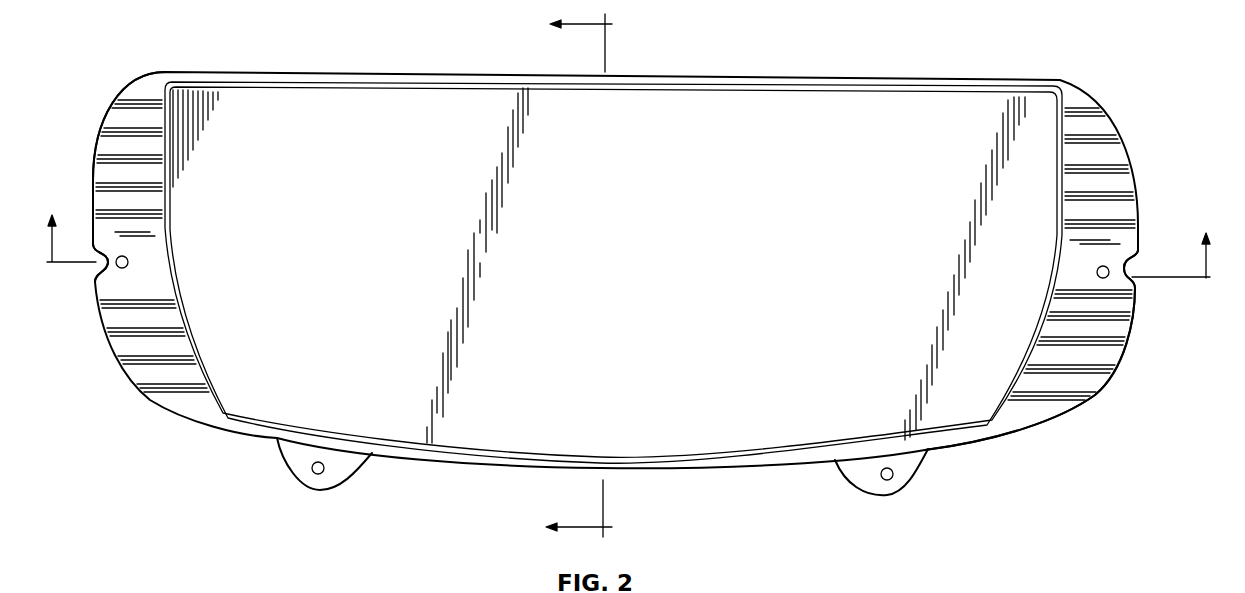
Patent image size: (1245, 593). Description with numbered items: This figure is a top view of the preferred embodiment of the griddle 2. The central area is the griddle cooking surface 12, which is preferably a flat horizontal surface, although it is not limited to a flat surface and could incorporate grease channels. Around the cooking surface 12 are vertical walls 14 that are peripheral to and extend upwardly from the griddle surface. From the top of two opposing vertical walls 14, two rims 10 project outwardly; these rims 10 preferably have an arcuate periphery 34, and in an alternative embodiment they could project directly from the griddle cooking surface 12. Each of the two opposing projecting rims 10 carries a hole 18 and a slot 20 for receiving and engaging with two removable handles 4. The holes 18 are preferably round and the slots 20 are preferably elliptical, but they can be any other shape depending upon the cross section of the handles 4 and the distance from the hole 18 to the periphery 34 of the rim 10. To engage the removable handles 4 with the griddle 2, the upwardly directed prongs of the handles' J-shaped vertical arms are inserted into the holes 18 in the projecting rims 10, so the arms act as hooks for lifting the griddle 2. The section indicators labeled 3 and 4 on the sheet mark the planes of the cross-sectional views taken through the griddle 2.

The griddle 2 is at (1124, 98).
The rim 10 is at (100, 173).
The griddle cooking surface 12 is at (655, 148).
The vertical walls 14 is at (168, 197).
The hole 18 is at (129, 265).
The slot 20 is at (94, 264).
The periphery 34 is at (108, 115).
The section line 3- 3 is at (568, 276).
The removable handles 4 is at (628, 233).